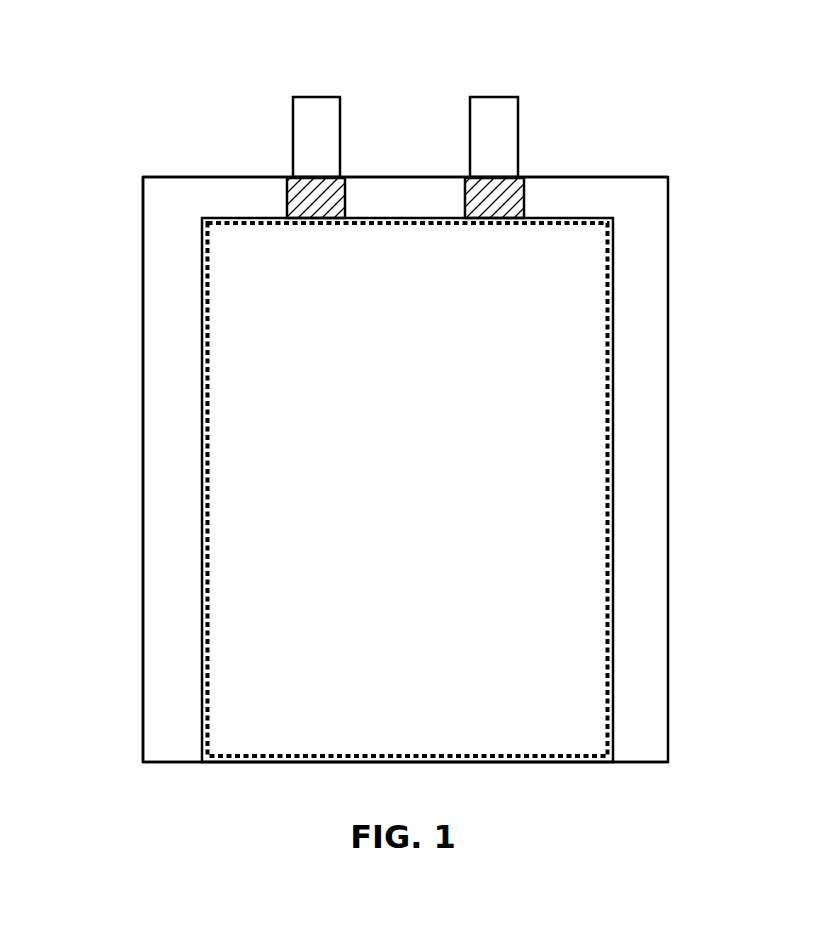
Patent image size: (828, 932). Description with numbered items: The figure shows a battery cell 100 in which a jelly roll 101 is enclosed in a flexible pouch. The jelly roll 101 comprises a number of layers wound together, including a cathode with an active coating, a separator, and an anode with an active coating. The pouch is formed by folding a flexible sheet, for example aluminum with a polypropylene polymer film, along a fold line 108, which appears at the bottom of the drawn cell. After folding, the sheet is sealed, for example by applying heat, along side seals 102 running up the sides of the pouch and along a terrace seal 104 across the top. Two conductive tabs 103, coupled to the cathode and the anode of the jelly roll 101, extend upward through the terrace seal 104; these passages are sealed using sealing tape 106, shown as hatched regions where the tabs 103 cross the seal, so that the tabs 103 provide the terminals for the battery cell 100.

The battery cell 100 is at (143, 177).
The jelly roll 101 is at (407, 490).
The side seals 102 is at (142, 460).
The conductive tabs 103 is at (482, 97).
The terrace seal 104 is at (553, 177).
The sealing tape 106 is at (323, 222).
The fold line 108 is at (482, 762).